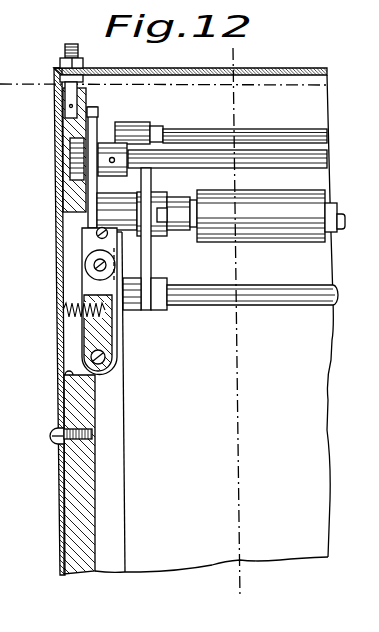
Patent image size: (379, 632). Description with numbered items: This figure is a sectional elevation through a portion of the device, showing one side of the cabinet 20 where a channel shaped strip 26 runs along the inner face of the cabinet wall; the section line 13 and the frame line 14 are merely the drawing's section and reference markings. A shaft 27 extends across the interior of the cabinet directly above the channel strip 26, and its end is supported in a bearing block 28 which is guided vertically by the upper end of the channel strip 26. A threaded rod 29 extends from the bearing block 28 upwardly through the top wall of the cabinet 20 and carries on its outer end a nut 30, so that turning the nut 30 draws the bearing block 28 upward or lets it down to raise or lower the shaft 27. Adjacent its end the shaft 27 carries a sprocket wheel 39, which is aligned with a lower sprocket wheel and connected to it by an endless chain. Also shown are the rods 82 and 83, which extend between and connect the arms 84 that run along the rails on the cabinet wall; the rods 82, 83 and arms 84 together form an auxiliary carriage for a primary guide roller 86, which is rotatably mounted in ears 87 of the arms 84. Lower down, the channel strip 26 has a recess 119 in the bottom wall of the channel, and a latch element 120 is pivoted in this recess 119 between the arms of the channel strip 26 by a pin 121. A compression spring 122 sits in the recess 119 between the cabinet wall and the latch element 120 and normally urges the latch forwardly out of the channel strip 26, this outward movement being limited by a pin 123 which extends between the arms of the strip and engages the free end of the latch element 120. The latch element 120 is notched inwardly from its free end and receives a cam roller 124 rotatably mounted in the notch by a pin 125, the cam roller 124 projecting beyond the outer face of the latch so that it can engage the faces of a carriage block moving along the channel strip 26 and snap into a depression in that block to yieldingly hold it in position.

The section line 13 is at (230, 49).
The frame 14 is at (177, 321).
The cabinet 20 is at (285, 64).
The channel shaped strip 26 is at (120, 421).
The shaft 27 is at (272, 161).
The bearing block 28 is at (86, 200).
The threaded rod 29 is at (78, 89).
The nut 30 is at (62, 62).
The sprocket wheel 39 is at (62, 154).
The rod 82 is at (214, 291).
The rod 83 is at (272, 132).
The arm 84 is at (151, 271).
The primary guide roller 86 is at (291, 232).
The ear 87 is at (188, 199).
The recess 119 is at (70, 373).
The latch element 120 is at (101, 334).
The pin 121 is at (110, 358).
The compression spring 122 is at (64, 305).
The pin 123 is at (82, 247).
The cam roller 124 is at (124, 257).
The pin 125 is at (96, 268).